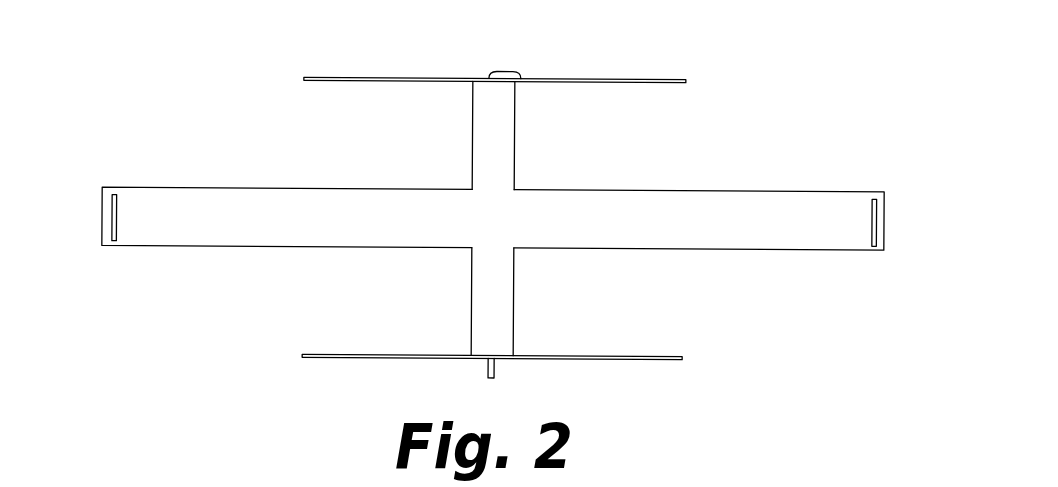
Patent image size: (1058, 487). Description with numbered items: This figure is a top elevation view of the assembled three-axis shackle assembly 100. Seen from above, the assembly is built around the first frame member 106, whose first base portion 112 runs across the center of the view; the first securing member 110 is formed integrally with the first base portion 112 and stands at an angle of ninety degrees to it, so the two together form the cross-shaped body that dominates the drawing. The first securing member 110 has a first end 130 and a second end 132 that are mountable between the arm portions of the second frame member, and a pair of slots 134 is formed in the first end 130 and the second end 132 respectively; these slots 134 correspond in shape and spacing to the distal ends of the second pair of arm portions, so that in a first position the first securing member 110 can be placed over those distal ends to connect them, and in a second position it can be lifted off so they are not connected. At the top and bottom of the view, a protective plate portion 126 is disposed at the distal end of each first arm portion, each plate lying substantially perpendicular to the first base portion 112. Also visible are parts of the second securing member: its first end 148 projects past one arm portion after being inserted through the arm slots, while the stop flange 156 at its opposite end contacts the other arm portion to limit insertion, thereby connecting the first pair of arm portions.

The three-axis shackle assembly 100 is at (786, 92).
The first frame member 106 is at (482, 94).
The first securing member 110 is at (184, 249).
The first base portion 112 is at (490, 311).
The protective plate portion 126 is at (636, 80).
The first end 130 is at (805, 208).
The second end 132 is at (167, 212).
The slots 134 is at (114, 248).
The first end 148 is at (490, 372).
The stop flange 156 is at (508, 72).